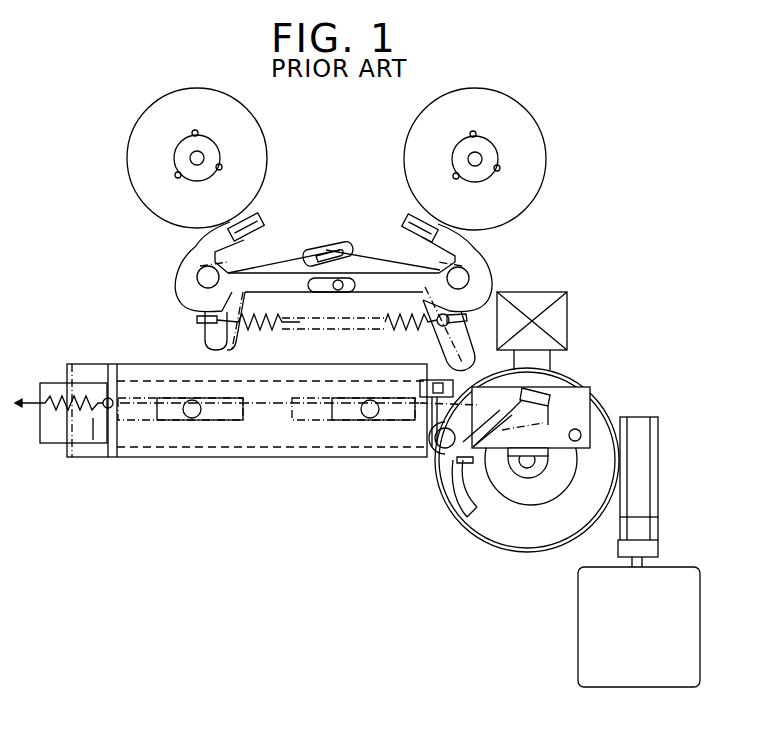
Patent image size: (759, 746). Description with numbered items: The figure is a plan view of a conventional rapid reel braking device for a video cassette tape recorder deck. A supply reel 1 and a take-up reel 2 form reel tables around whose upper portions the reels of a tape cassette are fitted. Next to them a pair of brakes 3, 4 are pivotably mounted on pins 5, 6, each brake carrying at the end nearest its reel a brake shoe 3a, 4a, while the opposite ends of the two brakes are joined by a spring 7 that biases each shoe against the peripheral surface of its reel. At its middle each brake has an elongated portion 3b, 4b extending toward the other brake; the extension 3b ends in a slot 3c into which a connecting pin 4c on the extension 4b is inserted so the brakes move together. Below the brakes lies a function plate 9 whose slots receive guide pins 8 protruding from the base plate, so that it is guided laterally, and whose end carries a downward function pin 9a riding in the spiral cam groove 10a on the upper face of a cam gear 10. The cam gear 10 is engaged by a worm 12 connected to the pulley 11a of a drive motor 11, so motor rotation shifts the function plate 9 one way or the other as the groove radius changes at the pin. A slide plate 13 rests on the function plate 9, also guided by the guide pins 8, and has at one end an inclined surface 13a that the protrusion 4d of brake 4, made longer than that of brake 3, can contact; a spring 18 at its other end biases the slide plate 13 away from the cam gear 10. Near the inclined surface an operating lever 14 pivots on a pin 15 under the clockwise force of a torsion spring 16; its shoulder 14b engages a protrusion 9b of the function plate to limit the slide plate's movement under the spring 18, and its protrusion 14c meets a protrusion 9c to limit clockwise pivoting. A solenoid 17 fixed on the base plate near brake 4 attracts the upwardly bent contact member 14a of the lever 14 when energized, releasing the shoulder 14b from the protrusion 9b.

The supply reel 1 is at (268, 152).
The take-up reel 2 is at (547, 152).
The brake 3 is at (184, 290).
The brake shoe 3a is at (263, 226).
The elongated portion 3b is at (296, 294).
The slot 3c is at (320, 284).
The brake 4 is at (488, 280).
The brake shoe 4a is at (418, 224).
The elongated portion 4b is at (372, 294).
The connecting pin 4c is at (346, 262).
The protrusion 4d is at (470, 352).
The pin 5 is at (199, 272).
The pin 6 is at (480, 272).
The spring 7 is at (198, 333).
The guide pin 8 is at (190, 420).
The function plate 9 is at (93, 442).
The function pin 9a is at (582, 432).
The protrusion 9b is at (452, 465).
The protrusion 9c is at (528, 520).
The cam gear 10 is at (556, 542).
The spiral cam groove 10a is at (466, 514).
The drive motor 11 is at (692, 620).
The pulley 11a is at (655, 548).
The worm 12 is at (642, 470).
The slide plate 13 is at (275, 458).
The inclined surface 13a is at (518, 342).
The operating lever 14 is at (582, 396).
The contact member 14a is at (548, 400).
The shoulder 14b is at (492, 470).
The protrusion 14c is at (527, 470).
The pin 15 is at (440, 446).
The torsion spring 16 is at (434, 428).
The solenoid 17 is at (568, 318).
The spring 18 is at (55, 412).